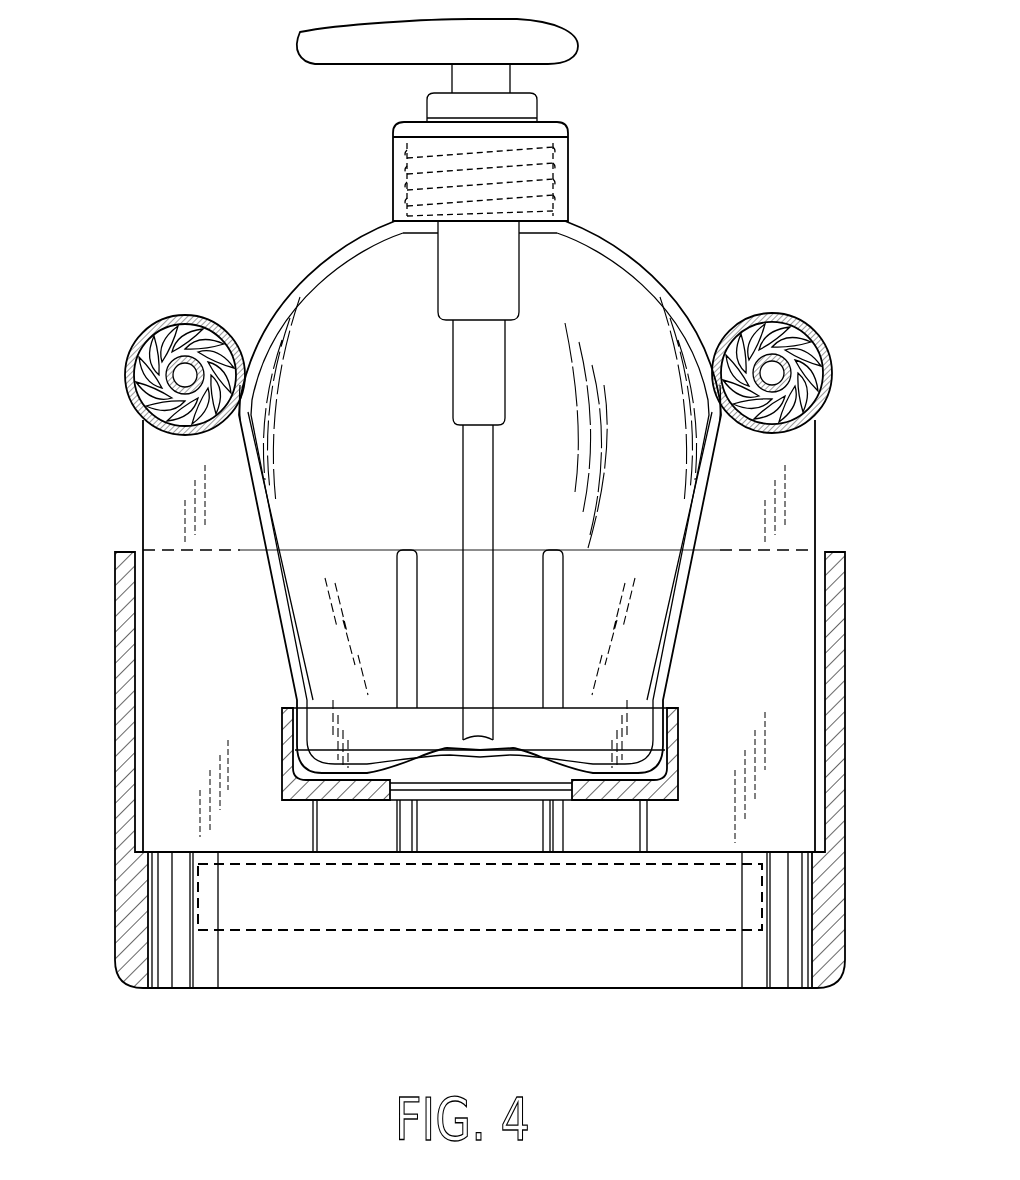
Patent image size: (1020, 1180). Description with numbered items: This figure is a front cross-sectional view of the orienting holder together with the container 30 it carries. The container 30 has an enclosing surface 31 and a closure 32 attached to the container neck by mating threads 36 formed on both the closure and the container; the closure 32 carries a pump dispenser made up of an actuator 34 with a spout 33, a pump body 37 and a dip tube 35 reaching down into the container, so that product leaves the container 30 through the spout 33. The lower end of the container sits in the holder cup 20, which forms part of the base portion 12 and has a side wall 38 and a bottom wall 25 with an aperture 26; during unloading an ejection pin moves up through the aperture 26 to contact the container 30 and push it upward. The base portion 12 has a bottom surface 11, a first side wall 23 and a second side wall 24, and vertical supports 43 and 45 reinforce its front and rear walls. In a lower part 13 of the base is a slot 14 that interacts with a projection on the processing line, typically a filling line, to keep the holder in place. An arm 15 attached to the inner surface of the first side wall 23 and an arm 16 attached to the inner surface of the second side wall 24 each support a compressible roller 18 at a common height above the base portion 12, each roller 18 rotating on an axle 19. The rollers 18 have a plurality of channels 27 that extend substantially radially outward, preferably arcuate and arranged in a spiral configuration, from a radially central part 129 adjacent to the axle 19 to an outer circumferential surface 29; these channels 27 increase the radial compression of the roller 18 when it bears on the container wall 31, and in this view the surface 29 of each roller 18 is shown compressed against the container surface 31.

The bottom surface 11 is at (830, 985).
The base portion 12 is at (846, 700).
The lower part 13 is at (185, 950).
The slot 14 is at (640, 900).
The arm 15 is at (155, 515).
The arm 16 is at (793, 495).
The roller 18 is at (125, 388).
The axle 19 is at (175, 370).
The holder cup 20 is at (678, 757).
The first side wall 23 is at (115, 643).
The second side wall 24 is at (843, 595).
The bottom wall 25 is at (605, 803).
The aperture 26 is at (473, 791).
The channels 27 is at (173, 327).
The outer circumferential surface 29 is at (245, 350).
The container 30 is at (560, 410).
The enclosing surface 31 is at (636, 262).
The closure 32 is at (567, 163).
The spout 33 is at (297, 38).
The actuator 34 is at (567, 40).
The dip tube 35 is at (463, 448).
The threads 36 is at (393, 170).
The pump body 37 is at (507, 265).
The side wall 38 is at (282, 737).
The vertical support 43 is at (400, 823).
The vertical support 45 is at (550, 838).
The radially central part 129 is at (195, 330).